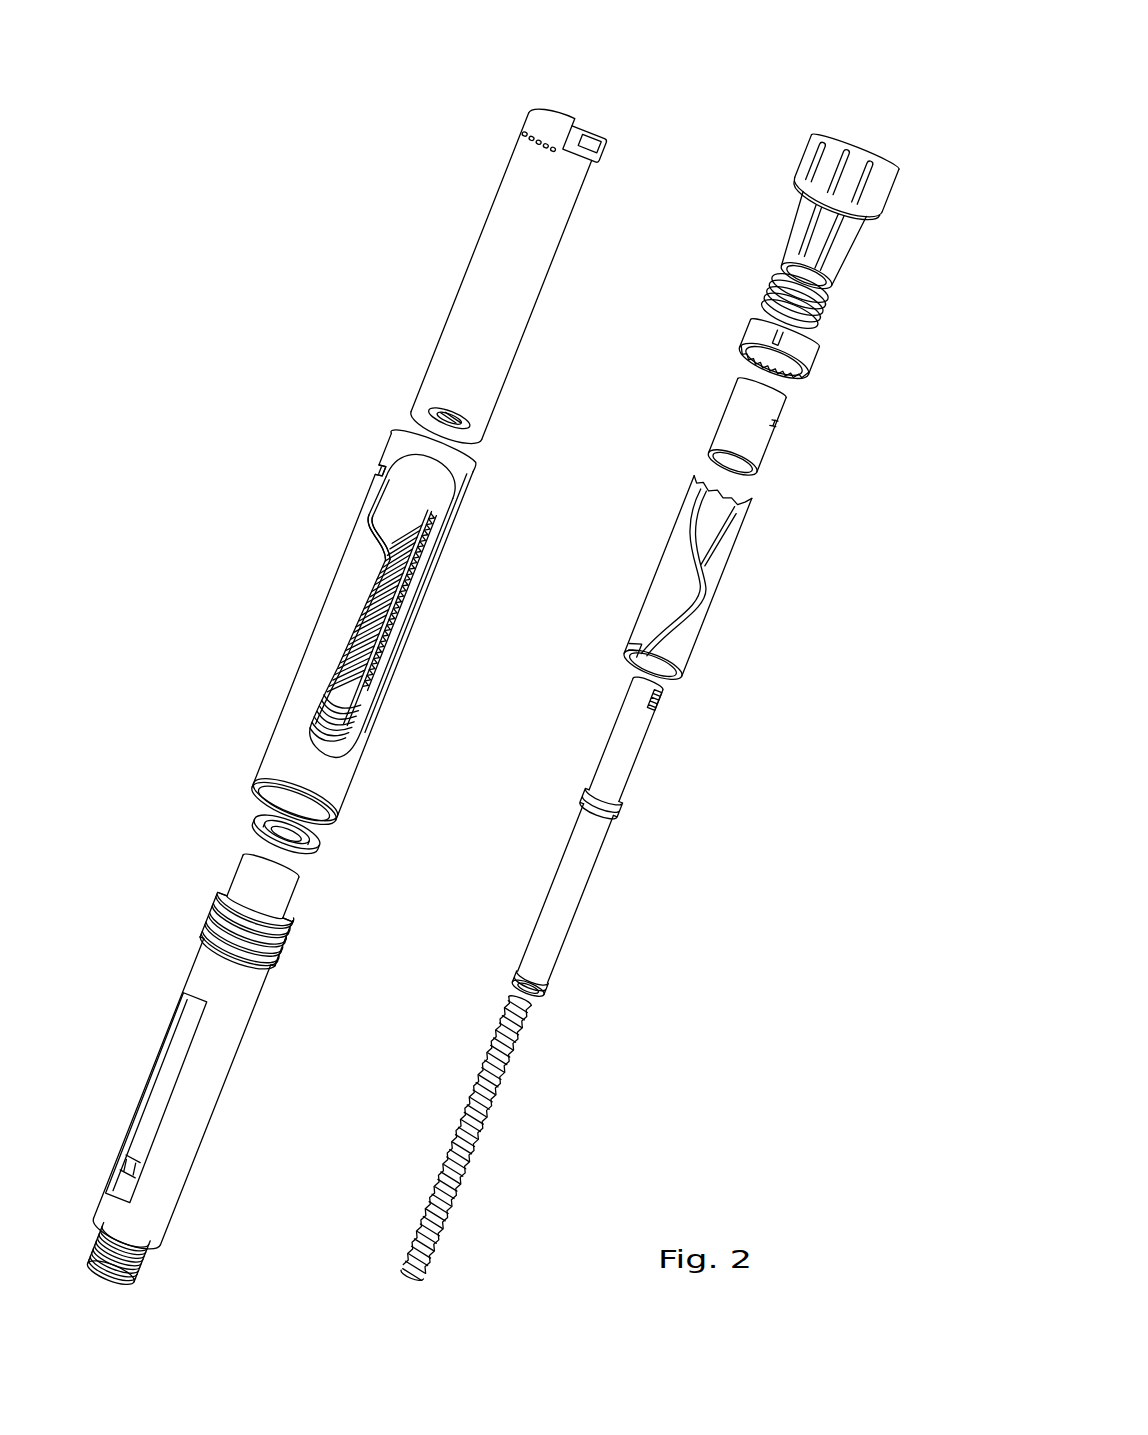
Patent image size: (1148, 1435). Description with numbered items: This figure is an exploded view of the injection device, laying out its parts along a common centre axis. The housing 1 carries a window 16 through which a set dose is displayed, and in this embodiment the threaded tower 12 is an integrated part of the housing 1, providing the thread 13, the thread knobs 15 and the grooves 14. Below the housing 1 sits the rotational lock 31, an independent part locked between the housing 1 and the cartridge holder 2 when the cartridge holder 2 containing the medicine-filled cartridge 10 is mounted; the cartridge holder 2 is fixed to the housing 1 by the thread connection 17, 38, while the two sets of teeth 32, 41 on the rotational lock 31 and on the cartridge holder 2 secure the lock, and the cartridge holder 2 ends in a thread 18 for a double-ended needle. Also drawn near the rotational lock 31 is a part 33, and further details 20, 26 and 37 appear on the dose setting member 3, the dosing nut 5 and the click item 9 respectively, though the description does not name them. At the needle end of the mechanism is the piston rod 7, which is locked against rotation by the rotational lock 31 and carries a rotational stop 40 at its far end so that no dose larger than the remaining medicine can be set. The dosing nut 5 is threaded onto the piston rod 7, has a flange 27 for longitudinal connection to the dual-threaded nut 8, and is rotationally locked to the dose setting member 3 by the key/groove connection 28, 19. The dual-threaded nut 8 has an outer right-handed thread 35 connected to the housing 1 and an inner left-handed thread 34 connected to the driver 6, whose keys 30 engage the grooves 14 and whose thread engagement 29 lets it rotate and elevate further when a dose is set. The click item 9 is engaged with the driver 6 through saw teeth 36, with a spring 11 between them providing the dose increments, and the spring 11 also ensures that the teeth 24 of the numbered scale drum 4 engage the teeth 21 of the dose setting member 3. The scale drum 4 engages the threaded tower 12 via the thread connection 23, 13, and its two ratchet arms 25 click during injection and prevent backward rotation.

The housing 1 is at (333, 518).
The cartridge holder 2 is at (160, 960).
The dose setting member 3 is at (850, 128).
The scale drum 4 is at (475, 187).
The dosing nut 5 is at (547, 802).
The driver 6 is at (652, 538).
The piston rod 7 is at (515, 1122).
The dual-threaded nut 8 is at (703, 413).
The click item 9 is at (722, 342).
The cartridge 10 is at (228, 868).
The spring 11 is at (828, 308).
The threaded tower 12 is at (370, 627).
The thread 13 is at (430, 560).
The grooves 14 is at (380, 668).
The thread knobs 15 is at (385, 517).
The window 16 is at (373, 505).
The thread connection 17 is at (277, 955).
The thread 18 is at (147, 1262).
The groove 19 is at (790, 253).
The knob shaft 20 is at (793, 230).
The teeth 21 is at (872, 222).
The thread connection 23 is at (438, 417).
The teeth 24 is at (522, 128).
The ratchet arms 25 is at (590, 128).
The end ring 26 is at (537, 993).
The flange 27 is at (620, 803).
The key 28 is at (662, 695).
The thread engagement 29 is at (710, 573).
The keys 30 is at (653, 660).
The rotational lock 31 is at (247, 802).
The teeth 32 is at (320, 843).
The washer 33 is at (265, 830).
The inner thread 34 is at (762, 475).
The outer thread 35 is at (783, 417).
The saw teeth 36 is at (813, 360).
The slot 37 is at (752, 320).
The thread connection 38 is at (323, 720).
The rotational stop 40 is at (495, 1013).
The teeth 41 is at (283, 928).